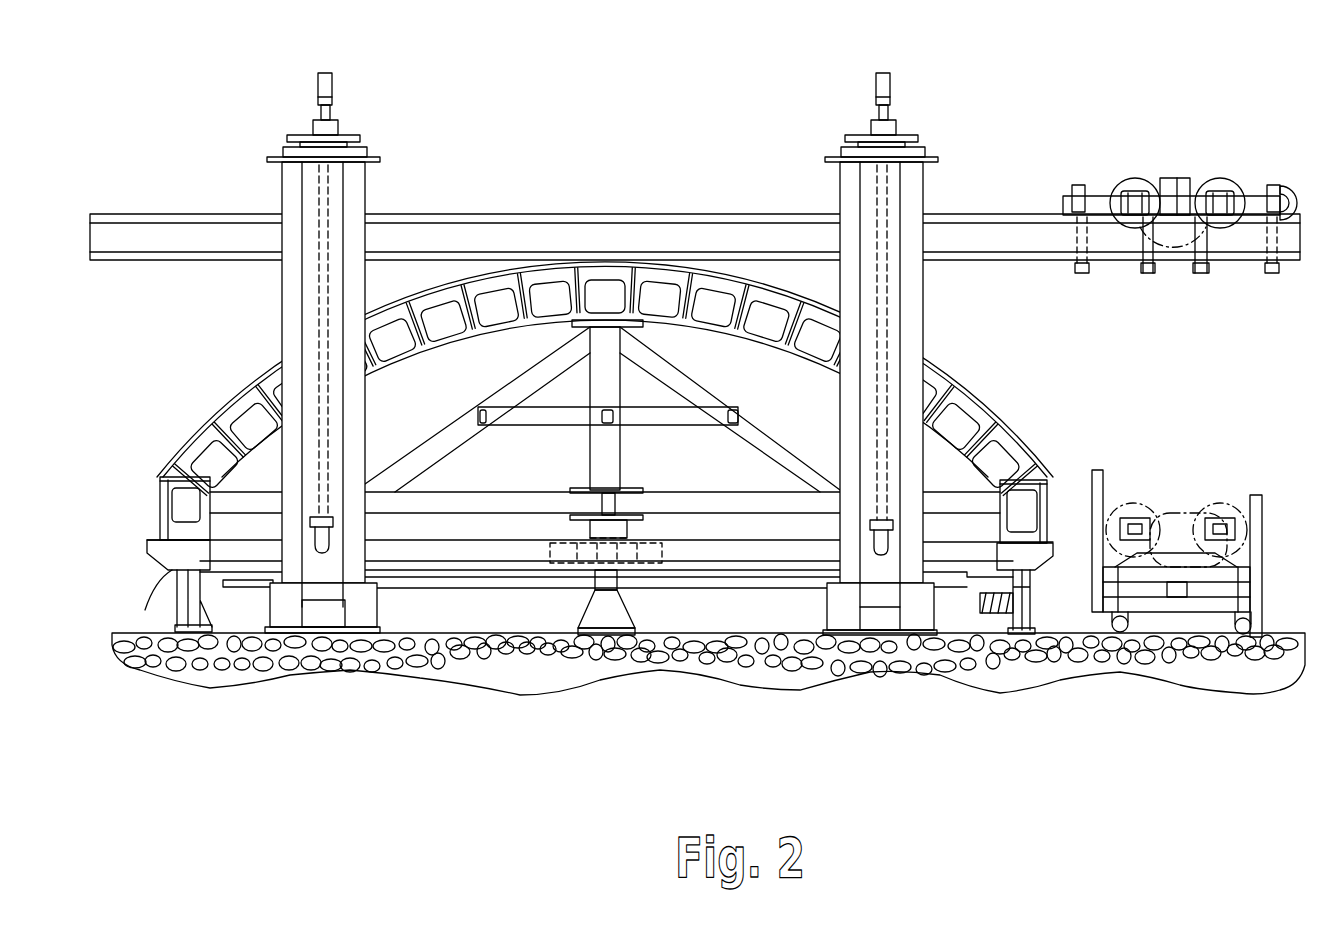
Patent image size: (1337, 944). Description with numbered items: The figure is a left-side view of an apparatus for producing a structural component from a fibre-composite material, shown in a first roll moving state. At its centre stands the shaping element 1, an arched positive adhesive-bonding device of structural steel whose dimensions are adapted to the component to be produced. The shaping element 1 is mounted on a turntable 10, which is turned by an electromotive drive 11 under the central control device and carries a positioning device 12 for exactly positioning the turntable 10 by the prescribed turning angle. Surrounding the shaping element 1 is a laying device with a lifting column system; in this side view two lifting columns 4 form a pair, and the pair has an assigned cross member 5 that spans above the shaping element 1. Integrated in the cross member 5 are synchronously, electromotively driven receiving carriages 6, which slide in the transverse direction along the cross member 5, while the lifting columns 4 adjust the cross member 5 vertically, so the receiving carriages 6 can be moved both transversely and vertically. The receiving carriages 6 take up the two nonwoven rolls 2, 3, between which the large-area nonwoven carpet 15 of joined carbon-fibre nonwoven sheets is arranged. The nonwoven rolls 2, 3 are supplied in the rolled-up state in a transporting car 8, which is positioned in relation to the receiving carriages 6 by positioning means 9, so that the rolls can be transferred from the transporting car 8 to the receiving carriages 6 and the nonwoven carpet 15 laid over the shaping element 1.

The shaping element 1 is at (698, 268).
The nonwoven roll 2 is at (1220, 179).
The nonwoven roll 3 is at (1135, 179).
The lifting column 4 is at (323, 580).
The cross member 5 is at (500, 236).
The receiving carriage 6 is at (1106, 273).
The transporting car 8 is at (1257, 552).
The positioning means 9 is at (1245, 640).
The turntable 10 is at (687, 585).
The electromotive drive 11 is at (993, 613).
The positioning device 12 is at (145, 610).
The nonwoven carpet 15 is at (1173, 247).